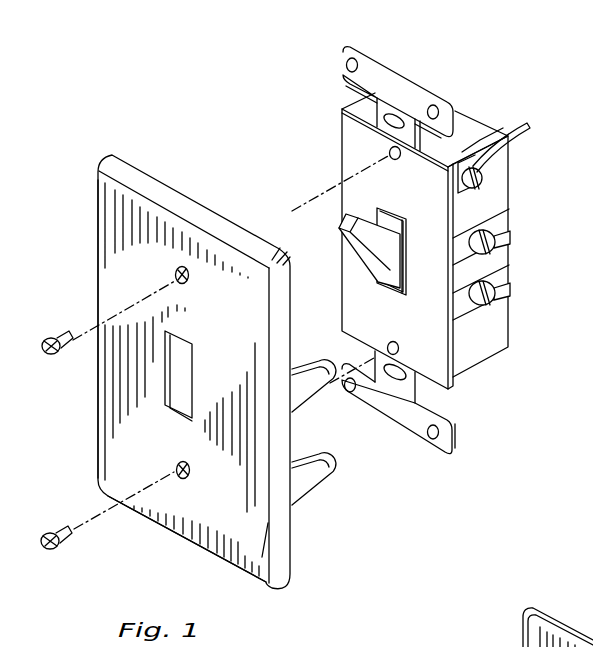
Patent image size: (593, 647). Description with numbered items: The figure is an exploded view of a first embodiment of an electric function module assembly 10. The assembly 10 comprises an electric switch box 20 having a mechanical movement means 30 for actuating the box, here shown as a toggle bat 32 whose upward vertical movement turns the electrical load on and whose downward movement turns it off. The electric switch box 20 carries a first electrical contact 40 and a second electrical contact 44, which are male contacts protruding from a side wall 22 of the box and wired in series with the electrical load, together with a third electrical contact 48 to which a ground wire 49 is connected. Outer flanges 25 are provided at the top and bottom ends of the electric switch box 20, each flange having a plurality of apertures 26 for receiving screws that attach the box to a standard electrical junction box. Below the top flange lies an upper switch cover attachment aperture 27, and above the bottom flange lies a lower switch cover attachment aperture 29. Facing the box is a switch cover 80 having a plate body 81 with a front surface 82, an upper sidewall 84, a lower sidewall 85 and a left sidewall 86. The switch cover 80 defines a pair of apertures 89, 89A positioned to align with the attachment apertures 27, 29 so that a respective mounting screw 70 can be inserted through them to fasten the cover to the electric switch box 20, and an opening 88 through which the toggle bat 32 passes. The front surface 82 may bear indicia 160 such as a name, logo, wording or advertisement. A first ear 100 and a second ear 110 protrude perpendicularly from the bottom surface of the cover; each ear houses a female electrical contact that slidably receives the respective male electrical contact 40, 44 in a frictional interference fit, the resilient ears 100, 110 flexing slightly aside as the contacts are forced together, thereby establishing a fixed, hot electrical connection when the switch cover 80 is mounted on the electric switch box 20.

The electric function module assembly 10 is at (160, 68).
The electric switch box 20 is at (463, 130).
The side wall 22 is at (497, 276).
The outer flanges 25 is at (400, 70).
The apertures 26 is at (378, 104).
The upper switch cover attachment aperture 27 is at (389, 152).
The lower switch cover attachment aperture 29 is at (399, 350).
The mechanical movement means 30 is at (350, 227).
The toggle bat 32 is at (368, 242).
The first electrical contact 40 is at (488, 241).
The second electrical contact 44 is at (490, 295).
The third electrical contact 48 is at (478, 166).
The ground wire 49 is at (521, 136).
The mounting screw 70 is at (58, 337).
The switch cover 80 is at (98, 186).
The plate body 81 is at (103, 246).
The front surface 82 is at (120, 371).
The upper sidewall 84 is at (178, 197).
The lower sidewall 85 is at (203, 552).
The left sidewall 86 is at (280, 302).
The opening 88 is at (176, 386).
The aperture 89 is at (176, 274).
The aperture 89A is at (176, 468).
The first ear 100 is at (303, 385).
The second ear 110 is at (310, 480).
The indicia 160 is at (252, 539).